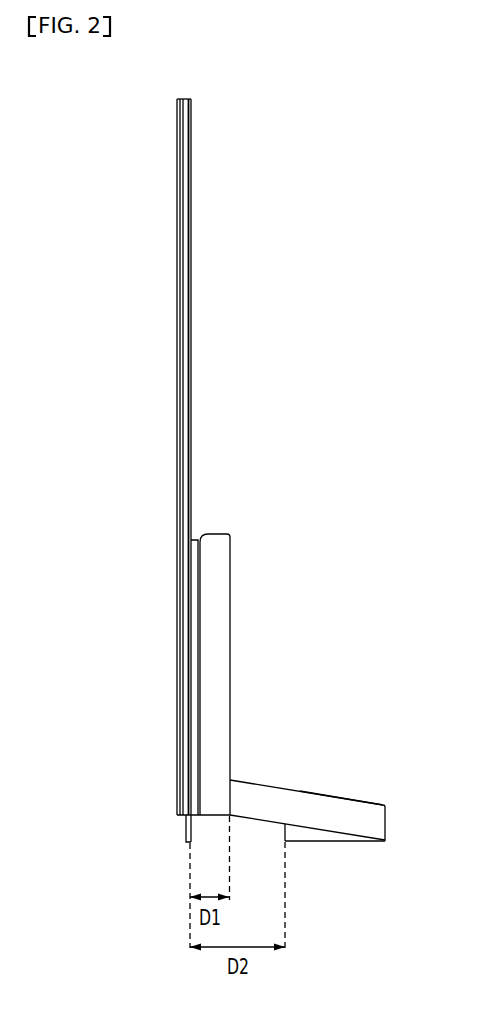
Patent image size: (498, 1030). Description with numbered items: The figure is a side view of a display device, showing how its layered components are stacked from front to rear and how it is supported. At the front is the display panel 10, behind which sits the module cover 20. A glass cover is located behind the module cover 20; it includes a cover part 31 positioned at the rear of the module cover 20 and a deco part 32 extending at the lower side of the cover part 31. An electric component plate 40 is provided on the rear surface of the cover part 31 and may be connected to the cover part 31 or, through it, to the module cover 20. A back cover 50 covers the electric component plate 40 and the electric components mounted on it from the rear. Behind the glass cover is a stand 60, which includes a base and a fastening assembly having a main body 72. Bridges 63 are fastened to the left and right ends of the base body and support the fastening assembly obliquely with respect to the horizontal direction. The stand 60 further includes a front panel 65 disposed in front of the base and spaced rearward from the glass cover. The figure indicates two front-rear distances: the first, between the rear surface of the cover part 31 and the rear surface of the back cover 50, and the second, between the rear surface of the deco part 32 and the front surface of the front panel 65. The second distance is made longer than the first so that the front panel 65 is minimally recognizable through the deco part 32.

The display panel 10 is at (177, 502).
The module cover 20 is at (183, 359).
The cover part 31 is at (191, 322).
The deco part 32 is at (186, 826).
The electric component plate 40 is at (214, 551).
The back cover 50 is at (236, 600).
The stand 60 is at (327, 765).
The bridge 63 is at (318, 837).
The front panel 65 is at (287, 832).
The main body 72 is at (355, 812).